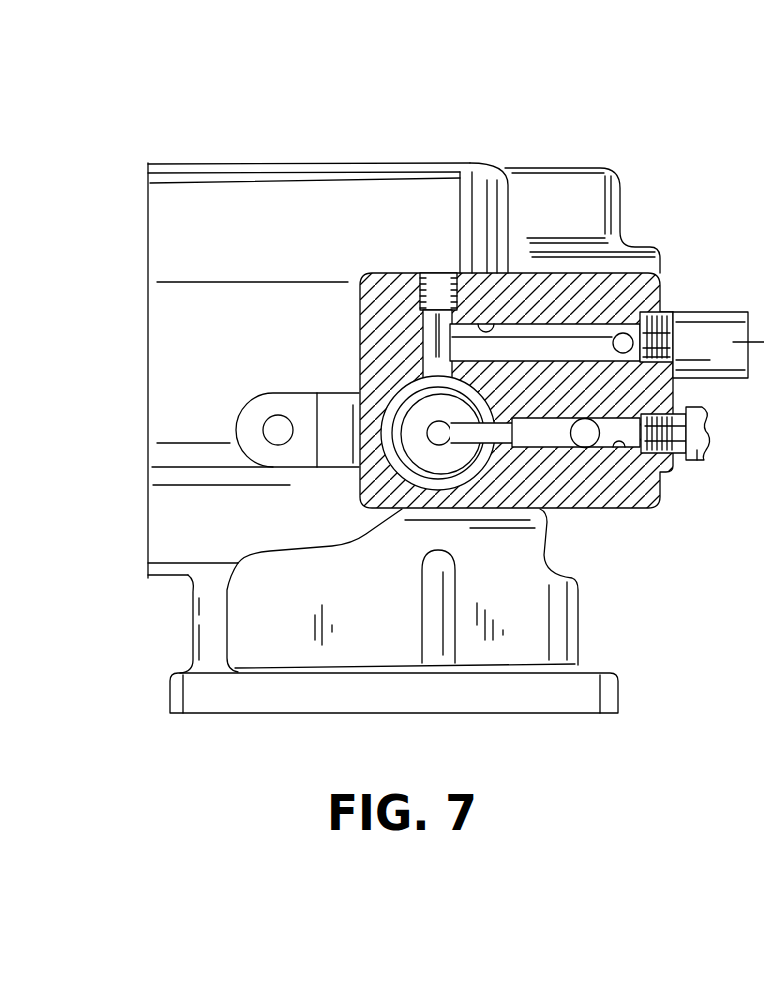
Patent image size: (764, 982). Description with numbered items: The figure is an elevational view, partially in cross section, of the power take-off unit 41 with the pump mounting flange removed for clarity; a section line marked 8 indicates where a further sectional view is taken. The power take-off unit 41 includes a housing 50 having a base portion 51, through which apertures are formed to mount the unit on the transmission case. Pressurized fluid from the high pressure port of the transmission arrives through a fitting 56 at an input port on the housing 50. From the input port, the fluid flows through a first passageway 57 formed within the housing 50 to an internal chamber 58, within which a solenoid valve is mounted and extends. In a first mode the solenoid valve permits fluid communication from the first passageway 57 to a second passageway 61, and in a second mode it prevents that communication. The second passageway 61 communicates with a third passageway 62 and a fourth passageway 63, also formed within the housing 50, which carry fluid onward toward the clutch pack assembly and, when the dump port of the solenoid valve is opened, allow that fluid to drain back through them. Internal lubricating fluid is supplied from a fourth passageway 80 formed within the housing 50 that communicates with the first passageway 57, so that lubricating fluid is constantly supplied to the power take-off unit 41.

The power take-off unit 41 is at (626, 134).
The housing 50 is at (534, 184).
The base portion 51 is at (210, 702).
The fitting 56 is at (694, 452).
The first passageway 57 is at (635, 448).
The internal chamber 58 is at (417, 460).
The second passageway 61 is at (432, 333).
The third passageway 62 is at (486, 336).
The fourth passageway 63 is at (631, 339).
The fourth passageway 80 is at (590, 441).
The section line 8- 8 is at (168, 343).